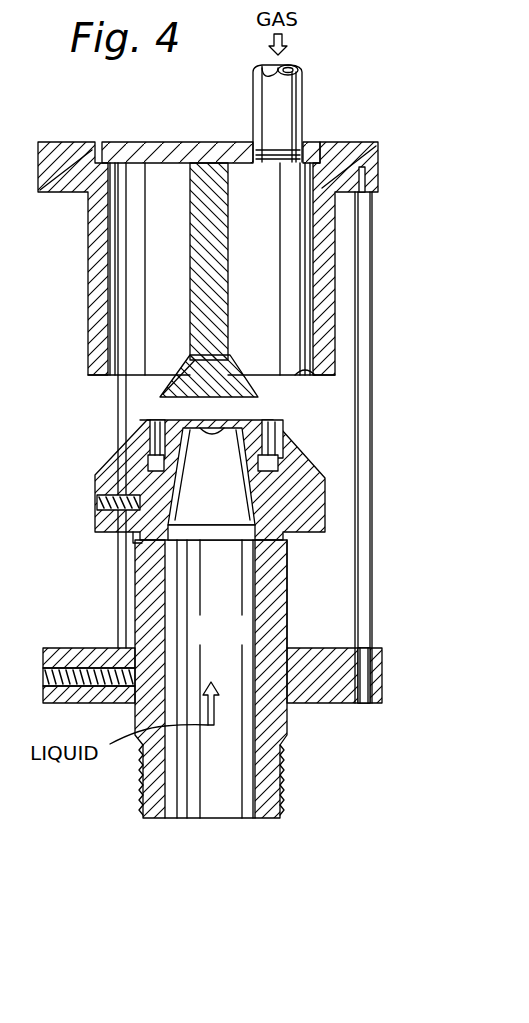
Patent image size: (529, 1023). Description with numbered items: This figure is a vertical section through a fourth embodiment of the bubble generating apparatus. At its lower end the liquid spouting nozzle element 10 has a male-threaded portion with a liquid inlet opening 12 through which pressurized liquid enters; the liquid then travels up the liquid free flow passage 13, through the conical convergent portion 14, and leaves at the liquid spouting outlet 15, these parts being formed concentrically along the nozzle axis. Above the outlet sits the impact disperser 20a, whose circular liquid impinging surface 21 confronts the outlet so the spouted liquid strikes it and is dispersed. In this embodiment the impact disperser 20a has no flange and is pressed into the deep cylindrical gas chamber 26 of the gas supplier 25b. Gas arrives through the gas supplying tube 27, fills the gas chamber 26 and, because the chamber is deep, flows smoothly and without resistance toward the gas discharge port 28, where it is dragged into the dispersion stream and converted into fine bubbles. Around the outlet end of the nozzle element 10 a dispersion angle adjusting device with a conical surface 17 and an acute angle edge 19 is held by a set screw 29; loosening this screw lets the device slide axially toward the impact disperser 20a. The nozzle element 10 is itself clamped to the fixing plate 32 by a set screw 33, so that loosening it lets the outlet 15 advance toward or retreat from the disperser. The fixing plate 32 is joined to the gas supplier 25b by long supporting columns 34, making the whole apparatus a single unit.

The liquid spouting nozzle element 10 is at (298, 608).
The liquid inlet opening 12 is at (210, 818).
The liquid free flow passage 13 is at (222, 639).
The conical convergent portion 14 is at (226, 481).
The liquid spouting outlet 15 is at (228, 428).
The conical surface 17 is at (107, 468).
The acute angle edge 19 is at (147, 420).
The impact disperser 20a is at (268, 196).
The liquid impinging surface 21 is at (235, 398).
The gas supplier 25b is at (450, 138).
The gas chamber 26 is at (266, 309).
The gas supplying tube 27 is at (300, 96).
The gas discharge port 28 is at (312, 383).
The set screw 29 is at (97, 503).
The fixing plate 32 is at (340, 690).
The set screw 33 is at (65, 668).
The supporting columns 34 is at (368, 270).